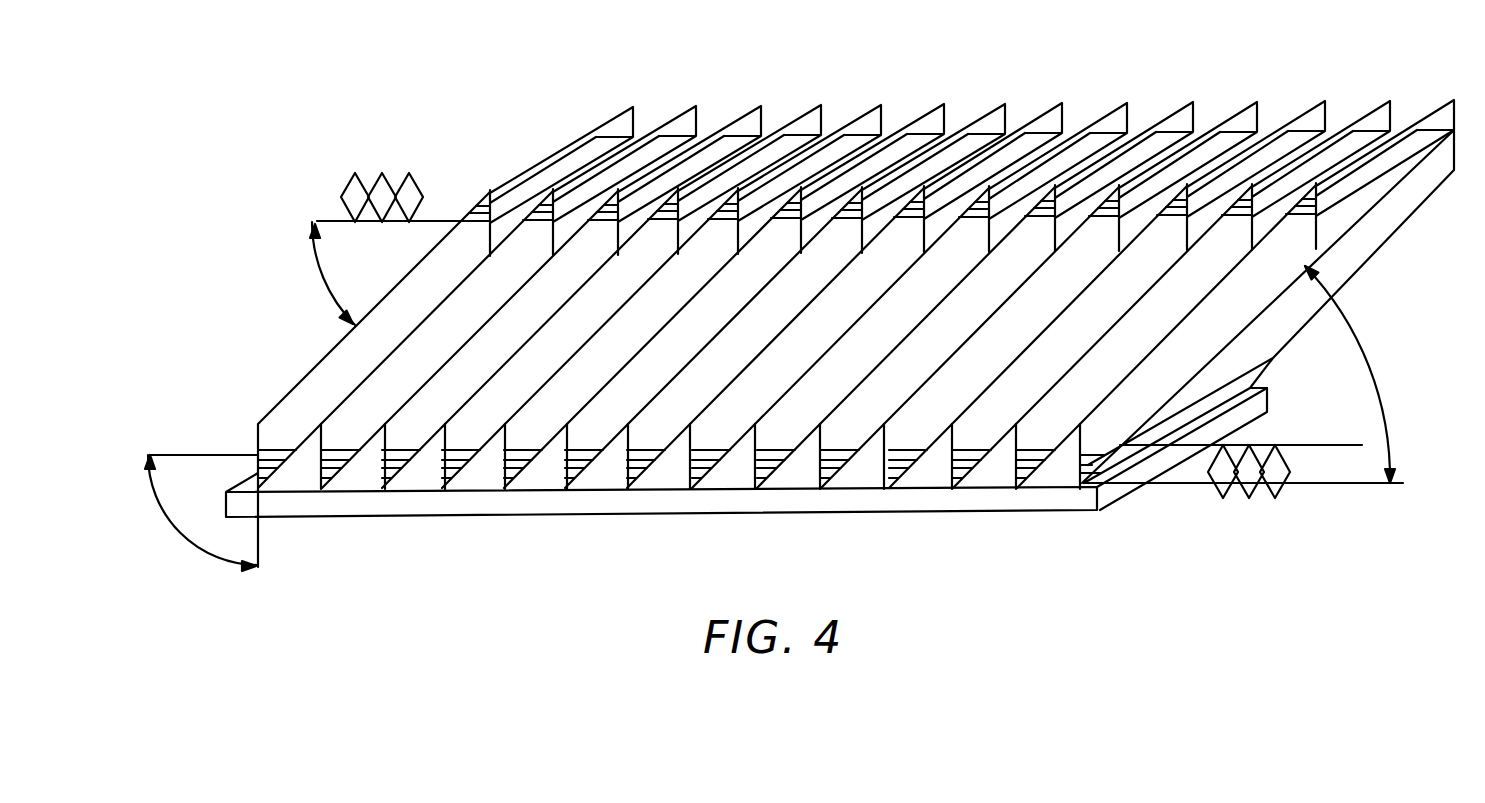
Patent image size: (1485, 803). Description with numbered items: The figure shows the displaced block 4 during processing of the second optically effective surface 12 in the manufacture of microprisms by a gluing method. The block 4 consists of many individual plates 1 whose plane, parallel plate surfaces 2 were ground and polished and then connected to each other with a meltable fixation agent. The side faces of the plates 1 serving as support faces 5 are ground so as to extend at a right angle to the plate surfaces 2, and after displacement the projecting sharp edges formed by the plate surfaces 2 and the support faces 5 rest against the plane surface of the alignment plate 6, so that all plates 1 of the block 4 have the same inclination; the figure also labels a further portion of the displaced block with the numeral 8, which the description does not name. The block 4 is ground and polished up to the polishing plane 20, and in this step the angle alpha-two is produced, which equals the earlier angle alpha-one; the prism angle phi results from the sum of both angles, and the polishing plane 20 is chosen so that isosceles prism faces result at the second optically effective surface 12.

The plate 1 is at (317, 397).
The plate surface 2 is at (1340, 262).
The block 4 is at (656, 96).
The support face 5 is at (1044, 490).
The alignment plate 6 is at (748, 500).
The inclined surface 8 is at (550, 228).
The second optically effective surface 12 is at (475, 218).
The polishing plane 20 is at (327, 220).